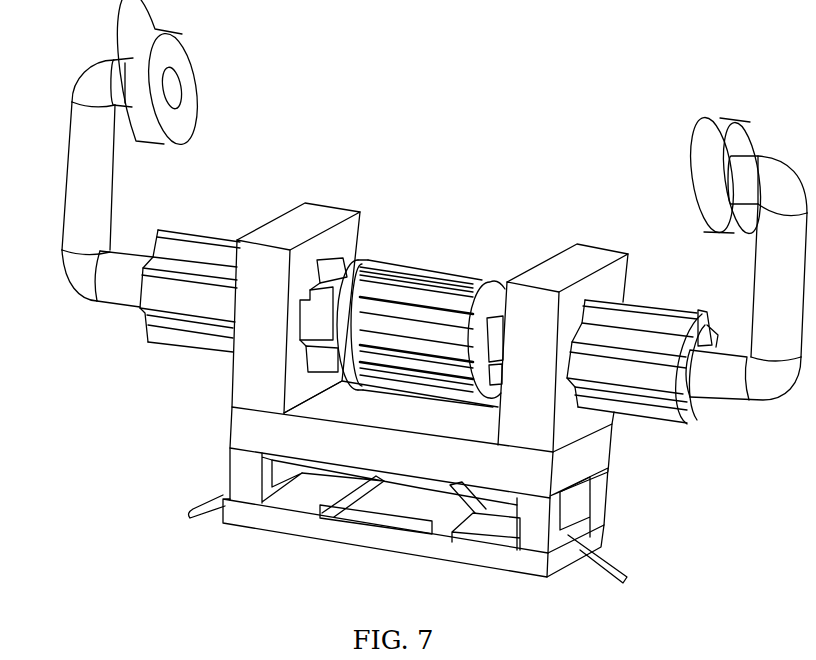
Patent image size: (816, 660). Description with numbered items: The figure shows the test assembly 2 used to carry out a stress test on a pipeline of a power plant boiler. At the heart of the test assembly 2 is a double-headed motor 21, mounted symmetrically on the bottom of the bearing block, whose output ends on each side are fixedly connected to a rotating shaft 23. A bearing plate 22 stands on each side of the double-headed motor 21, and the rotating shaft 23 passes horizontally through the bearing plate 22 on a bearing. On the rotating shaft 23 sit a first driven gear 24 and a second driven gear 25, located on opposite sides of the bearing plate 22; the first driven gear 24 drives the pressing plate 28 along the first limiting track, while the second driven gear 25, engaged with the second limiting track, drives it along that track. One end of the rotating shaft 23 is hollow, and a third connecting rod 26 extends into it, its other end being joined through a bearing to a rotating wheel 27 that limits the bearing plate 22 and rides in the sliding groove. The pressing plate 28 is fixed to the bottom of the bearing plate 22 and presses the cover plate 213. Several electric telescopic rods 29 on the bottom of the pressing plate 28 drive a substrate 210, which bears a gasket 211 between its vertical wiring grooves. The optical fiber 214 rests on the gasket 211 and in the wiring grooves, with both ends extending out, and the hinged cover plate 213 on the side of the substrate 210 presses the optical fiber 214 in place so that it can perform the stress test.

The test assembly 2 is at (446, 172).
The double-headed motor 21 is at (442, 265).
The bearing plate 22 is at (575, 245).
The rotating shaft 23 is at (701, 311).
The first driven gear 24 is at (344, 255).
The second driven gear 25 is at (203, 232).
The third connecting rod 26 is at (85, 190).
The rotating wheel 27 is at (197, 85).
The pressing plate 28 is at (607, 452).
The electric telescopic rod 29 is at (237, 477).
The substrate 210 is at (298, 523).
The gasket 211 is at (405, 517).
The cover plate 213 is at (488, 540).
The optical fiber 214 is at (585, 567).